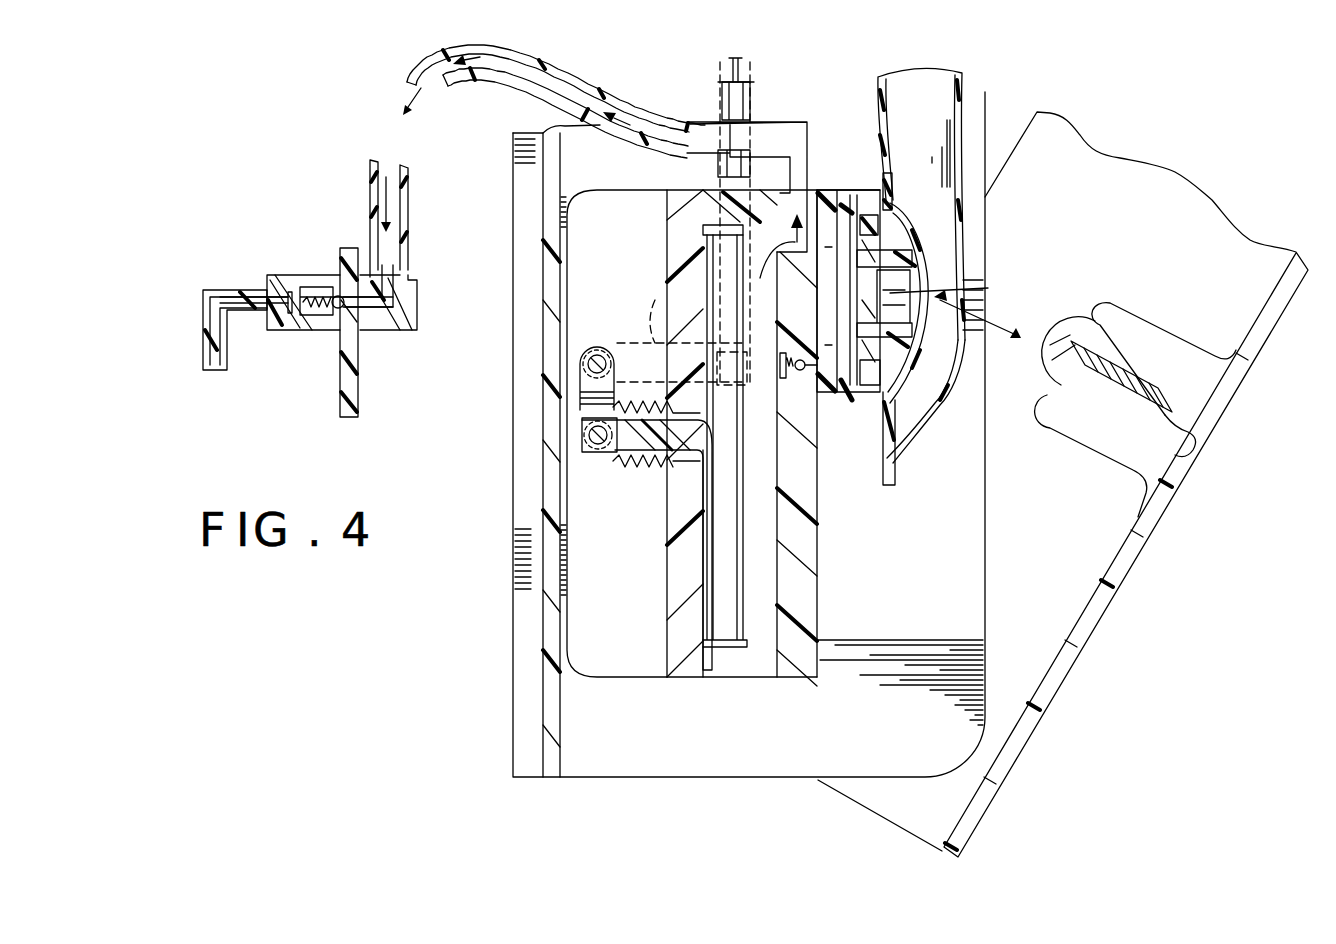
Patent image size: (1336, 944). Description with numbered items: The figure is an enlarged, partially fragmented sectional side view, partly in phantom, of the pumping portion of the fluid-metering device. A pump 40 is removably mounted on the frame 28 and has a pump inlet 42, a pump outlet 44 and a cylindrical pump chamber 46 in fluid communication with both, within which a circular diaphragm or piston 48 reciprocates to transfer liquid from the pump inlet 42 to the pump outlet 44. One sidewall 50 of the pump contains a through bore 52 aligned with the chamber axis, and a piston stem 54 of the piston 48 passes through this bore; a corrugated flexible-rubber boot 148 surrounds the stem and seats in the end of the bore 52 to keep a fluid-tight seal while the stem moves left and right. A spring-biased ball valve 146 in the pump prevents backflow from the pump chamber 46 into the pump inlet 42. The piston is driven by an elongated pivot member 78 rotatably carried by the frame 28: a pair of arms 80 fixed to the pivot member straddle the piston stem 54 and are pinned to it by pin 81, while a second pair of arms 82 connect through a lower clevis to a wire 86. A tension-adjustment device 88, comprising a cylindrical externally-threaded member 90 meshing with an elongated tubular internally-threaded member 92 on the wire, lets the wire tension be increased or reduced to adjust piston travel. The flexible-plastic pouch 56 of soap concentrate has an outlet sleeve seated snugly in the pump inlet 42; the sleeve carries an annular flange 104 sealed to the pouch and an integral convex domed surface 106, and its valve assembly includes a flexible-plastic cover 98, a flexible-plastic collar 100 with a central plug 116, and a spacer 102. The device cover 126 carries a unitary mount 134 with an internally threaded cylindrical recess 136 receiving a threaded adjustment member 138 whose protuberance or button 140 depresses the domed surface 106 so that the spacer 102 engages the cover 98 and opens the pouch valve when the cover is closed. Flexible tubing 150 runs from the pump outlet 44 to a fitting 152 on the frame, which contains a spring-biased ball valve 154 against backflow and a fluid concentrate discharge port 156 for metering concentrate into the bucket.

The frame 28 is at (340, 403).
The pump 40 is at (828, 513).
The pump inlet 42 is at (868, 184).
The pump outlet 44 is at (816, 130).
The pump chamber 46 is at (763, 476).
The diaphragm or piston 48 is at (730, 586).
The sidewall 50 is at (667, 612).
The through bore 52 is at (700, 446).
The piston stem 54 is at (624, 460).
The flexible-plastic container or pouch 56 is at (970, 81).
The pivot member 78 is at (593, 351).
The arms 80 is at (580, 393).
The pin 81 is at (582, 440).
The second arms 82 is at (658, 340).
The wire 86 is at (730, 70).
The tension-adjustment device 88 is at (766, 88).
The cylindrical externally-threaded member 90 is at (728, 190).
The elongated tubular internally-threaded member 92 is at (722, 102).
The flexible-plastic cover 98 is at (853, 393).
The flexible-plastic collar 100 is at (898, 440).
The spacer 102 is at (948, 388).
The annular flange 104 is at (900, 195).
The domed surface 106 is at (927, 245).
The plug 116 is at (959, 302).
The device cover 126 is at (1140, 613).
The mount 134 is at (1177, 333).
The cylindrical recess 136 is at (1190, 446).
The threaded adjustment member 138 is at (1112, 452).
The protuberance or button 140 is at (1072, 330).
The spring-biased ball valve 146 is at (806, 347).
The corrugated flexible-rubber boot 148 is at (632, 472).
The flexible tubing 150 is at (540, 62).
The fitting 152 is at (416, 313).
The spring-biased ball valve 154 is at (336, 296).
The fluid concentrate discharge port 156 is at (206, 344).